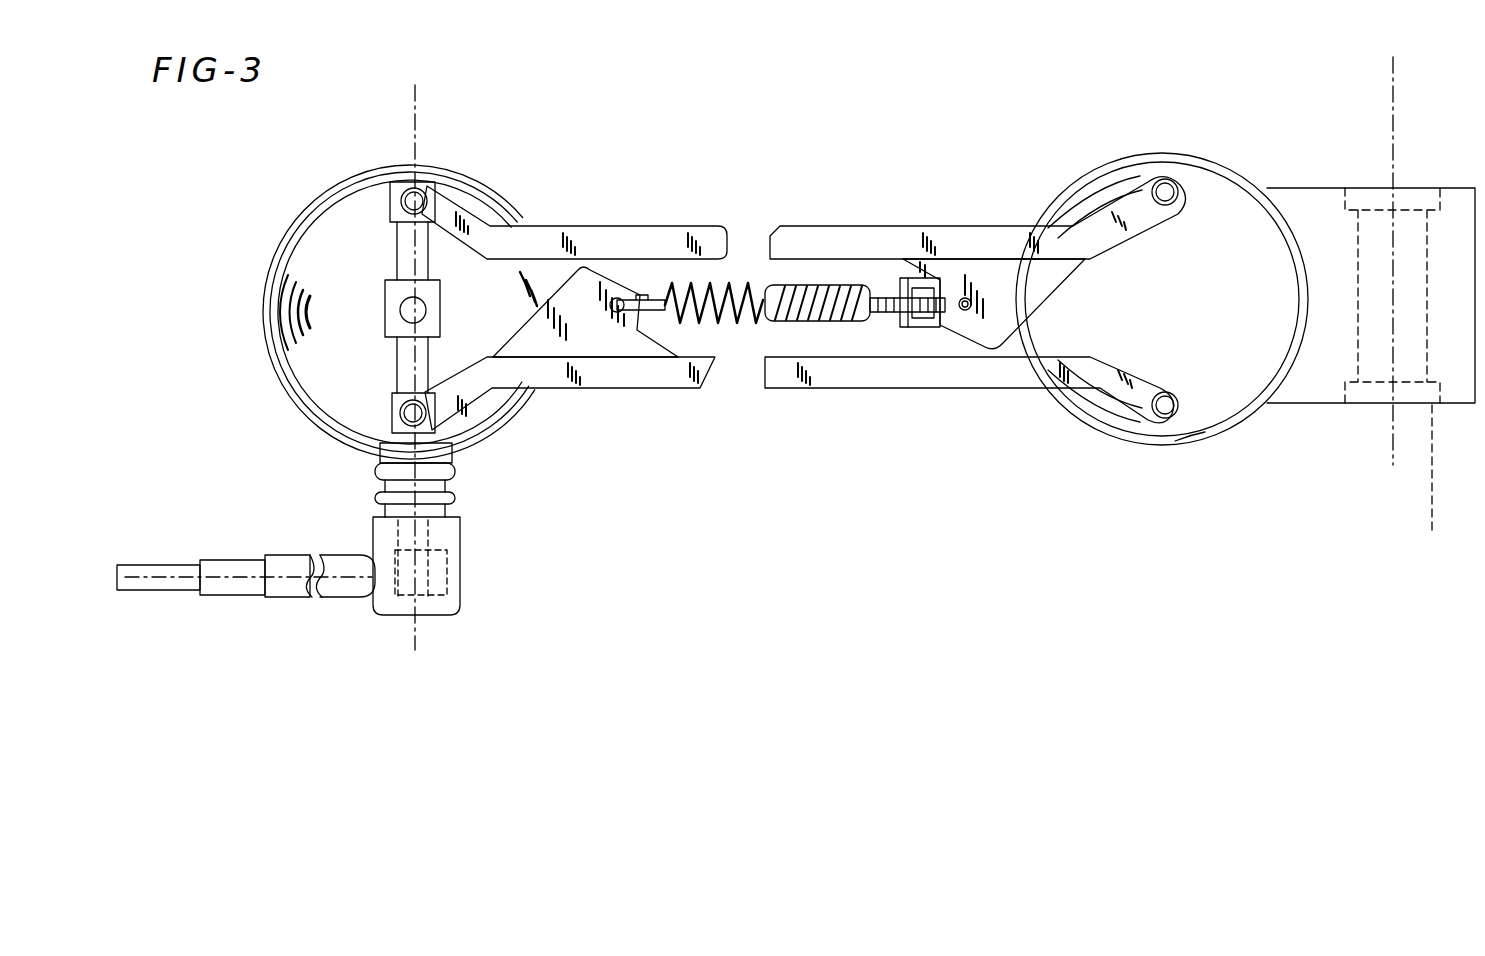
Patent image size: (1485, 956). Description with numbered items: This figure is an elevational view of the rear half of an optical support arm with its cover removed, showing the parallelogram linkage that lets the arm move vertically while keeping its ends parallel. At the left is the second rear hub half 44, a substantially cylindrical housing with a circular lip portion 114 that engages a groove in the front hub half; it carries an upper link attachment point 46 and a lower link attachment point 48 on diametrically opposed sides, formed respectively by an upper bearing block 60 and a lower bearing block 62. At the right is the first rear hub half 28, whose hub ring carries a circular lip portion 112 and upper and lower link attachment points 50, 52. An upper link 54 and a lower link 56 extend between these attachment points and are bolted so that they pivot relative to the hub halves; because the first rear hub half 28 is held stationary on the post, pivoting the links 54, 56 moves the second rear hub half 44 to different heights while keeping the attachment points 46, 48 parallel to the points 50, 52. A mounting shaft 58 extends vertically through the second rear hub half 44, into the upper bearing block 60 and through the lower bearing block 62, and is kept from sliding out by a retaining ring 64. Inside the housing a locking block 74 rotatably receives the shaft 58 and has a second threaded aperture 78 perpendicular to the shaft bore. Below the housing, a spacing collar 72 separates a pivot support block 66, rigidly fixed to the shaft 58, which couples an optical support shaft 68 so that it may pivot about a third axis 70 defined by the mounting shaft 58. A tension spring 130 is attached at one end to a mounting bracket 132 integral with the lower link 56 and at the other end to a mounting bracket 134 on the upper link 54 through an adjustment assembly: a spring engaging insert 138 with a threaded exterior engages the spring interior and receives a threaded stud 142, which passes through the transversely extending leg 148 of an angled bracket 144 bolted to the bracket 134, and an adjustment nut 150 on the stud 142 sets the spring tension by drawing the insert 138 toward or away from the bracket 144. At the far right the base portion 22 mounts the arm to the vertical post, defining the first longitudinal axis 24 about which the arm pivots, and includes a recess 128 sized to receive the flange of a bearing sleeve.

The base portion 22 is at (1345, 405).
The first longitudinal axis 24 is at (1393, 435).
The first rear hub half 28 is at (1088, 166).
The second rear hub half 44 is at (343, 178).
The upper link attachment point 46 is at (405, 186).
The lower link attachment point 48 is at (398, 447).
The upper link attachment point 50 is at (1180, 185).
The lower link attachment point 52 is at (1158, 418).
The upper link 54 is at (838, 226).
The lower link 56 is at (788, 388).
The mounting shaft 58 is at (398, 258).
The upper bearing block 60 is at (430, 188).
The lower bearing block 62 is at (385, 438).
The retaining ring 64 is at (393, 395).
The pivot support block 66 is at (460, 612).
The optical support shaft 68 is at (335, 598).
The third axis 70 is at (415, 650).
The spacing collar 72 is at (455, 495).
The locking block 74 is at (390, 300).
The second threaded aperture 78 is at (400, 322).
The lip portion 112 is at (1205, 432).
The lip portion 114 is at (280, 318).
The recess 128 is at (1395, 377).
The tension spring 130 is at (663, 290).
The mounting bracket 132 is at (580, 345).
The mounting bracket 134 is at (970, 268).
The spring engaging insert 138 is at (855, 292).
The threaded stud 142 is at (885, 312).
The angled bracket 144 is at (935, 327).
The transversely extending leg 148 is at (908, 327).
The adjustment nut 150 is at (925, 327).